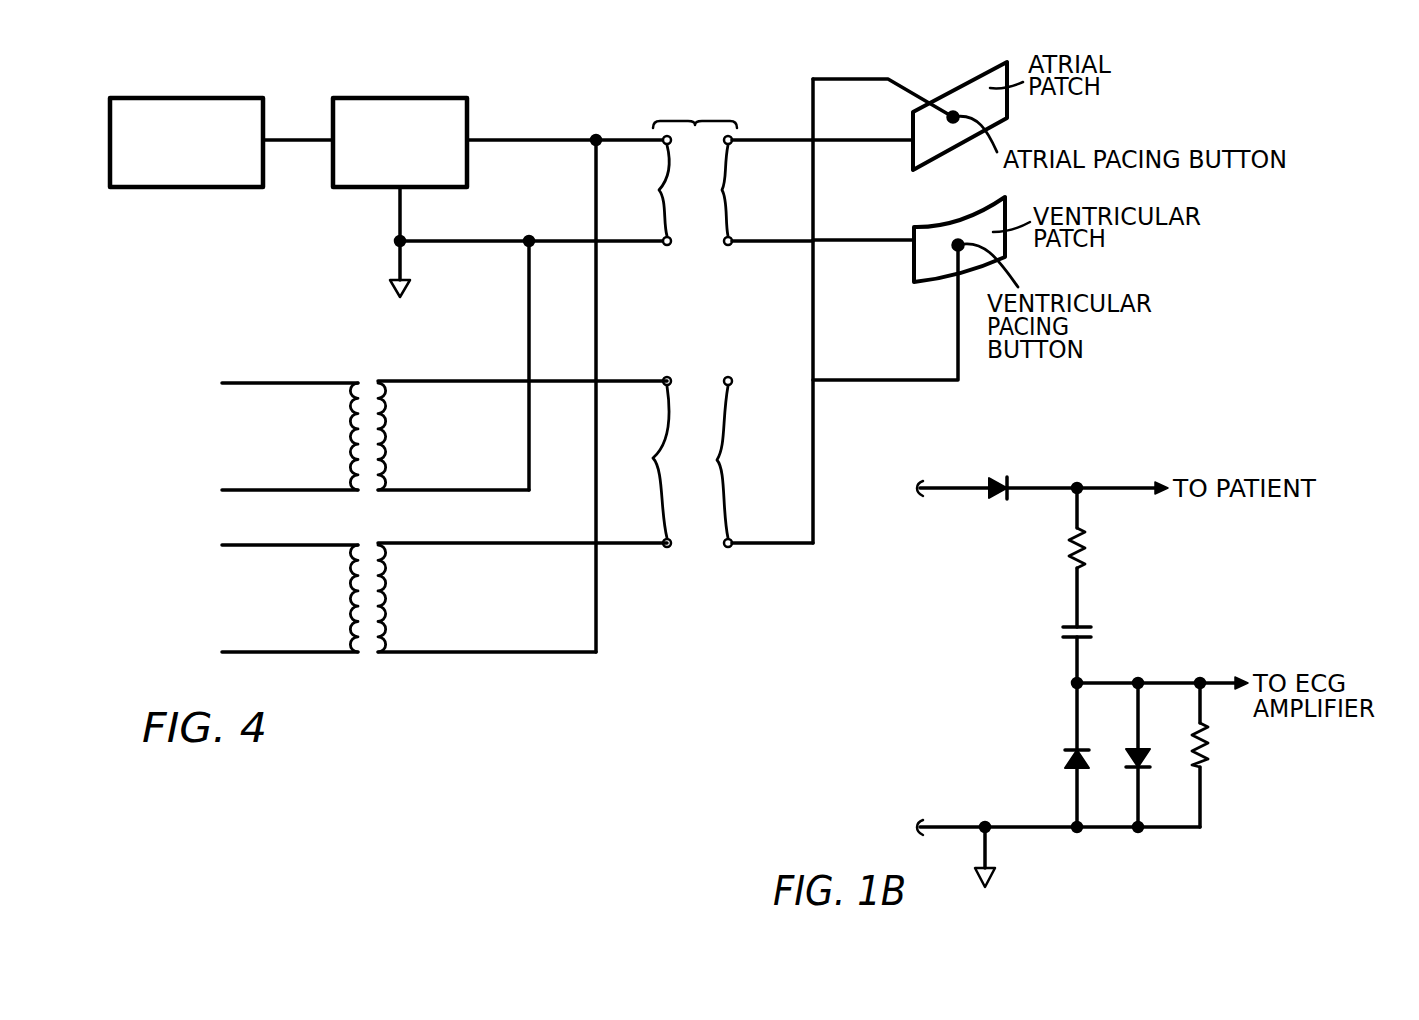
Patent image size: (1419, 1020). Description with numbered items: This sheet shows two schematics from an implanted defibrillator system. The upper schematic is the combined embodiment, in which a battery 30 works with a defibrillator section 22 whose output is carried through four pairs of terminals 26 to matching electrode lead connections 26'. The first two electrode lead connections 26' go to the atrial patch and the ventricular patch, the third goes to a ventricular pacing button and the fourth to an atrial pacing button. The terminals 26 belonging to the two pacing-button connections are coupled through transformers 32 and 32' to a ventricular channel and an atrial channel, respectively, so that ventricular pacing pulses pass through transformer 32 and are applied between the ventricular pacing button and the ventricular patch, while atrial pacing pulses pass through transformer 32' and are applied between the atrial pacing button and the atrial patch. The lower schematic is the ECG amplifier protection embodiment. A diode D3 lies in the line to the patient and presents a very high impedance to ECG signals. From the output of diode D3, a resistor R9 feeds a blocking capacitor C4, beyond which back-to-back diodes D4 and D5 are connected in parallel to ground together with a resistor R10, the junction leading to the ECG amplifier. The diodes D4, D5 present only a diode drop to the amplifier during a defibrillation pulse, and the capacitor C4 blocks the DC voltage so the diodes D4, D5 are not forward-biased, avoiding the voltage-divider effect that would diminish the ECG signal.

In FIG. 4, the battery 30 is at (221, 99).
In FIG. 4, the defibrillator section 22 is at (446, 99).
In FIG. 4, the terminals 26 is at (677, 334).
In FIG. 4, the electrode lead connections 26' is at (743, 341).
In FIG. 4, the transformer 32 is at (401, 458).
In FIG. 4, the transformer 32' is at (410, 628).
In FIG. 1B, the diode D3 is at (1002, 472).
In FIG. 1B, the diode D4 is at (1060, 755).
In FIG. 1B, the diode D5 is at (1126, 755).
In FIG. 1B, the resistor R9 is at (1093, 557).
In FIG. 1B, the resistor R10 is at (1220, 755).
In FIG. 1B, the blocking capacitor C4 is at (1095, 650).